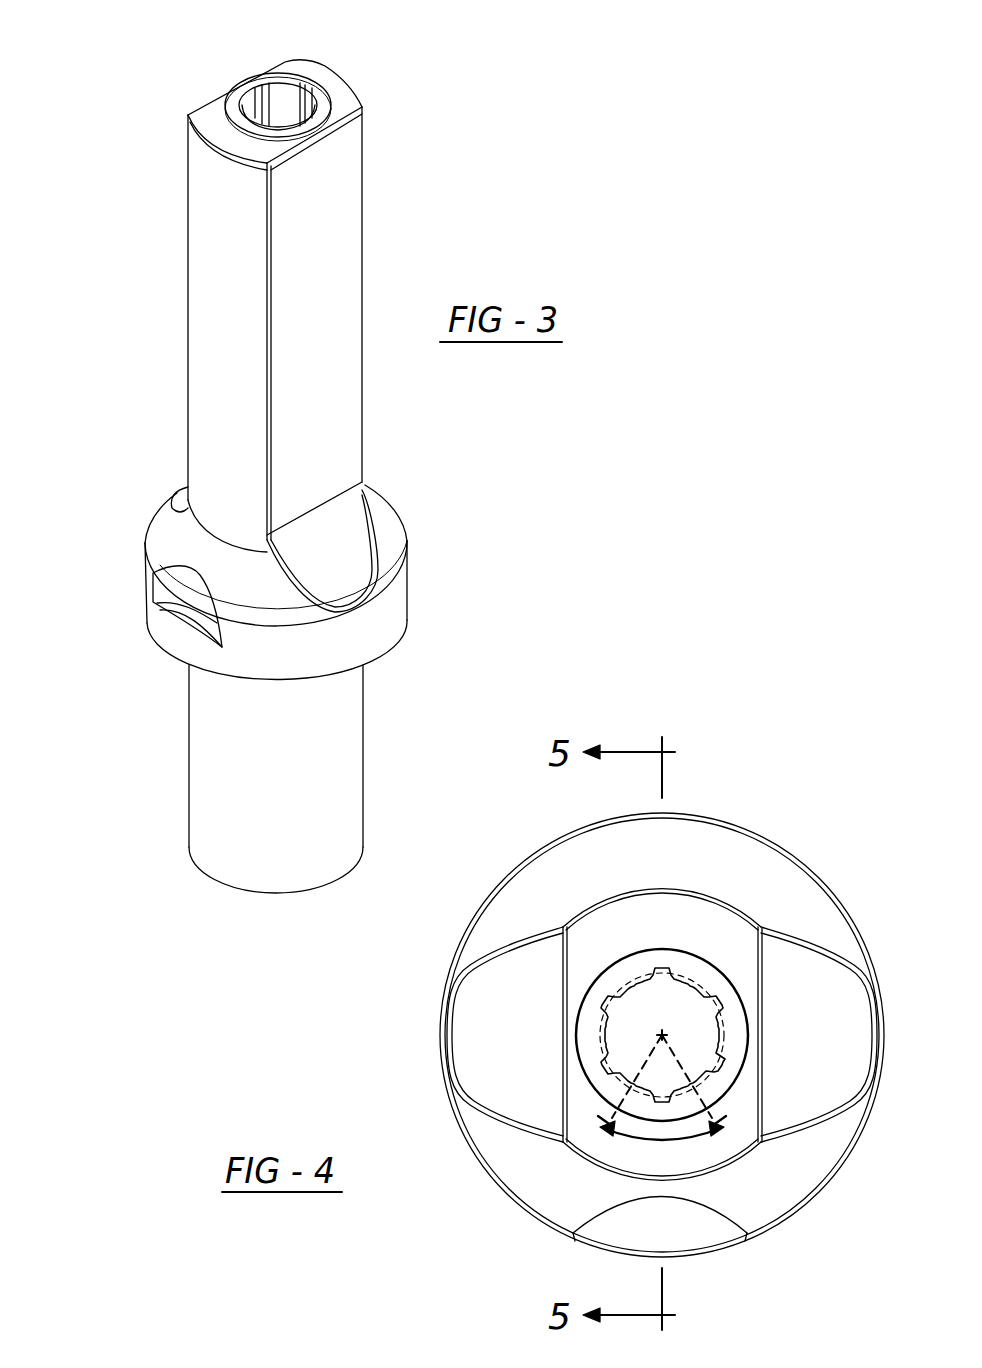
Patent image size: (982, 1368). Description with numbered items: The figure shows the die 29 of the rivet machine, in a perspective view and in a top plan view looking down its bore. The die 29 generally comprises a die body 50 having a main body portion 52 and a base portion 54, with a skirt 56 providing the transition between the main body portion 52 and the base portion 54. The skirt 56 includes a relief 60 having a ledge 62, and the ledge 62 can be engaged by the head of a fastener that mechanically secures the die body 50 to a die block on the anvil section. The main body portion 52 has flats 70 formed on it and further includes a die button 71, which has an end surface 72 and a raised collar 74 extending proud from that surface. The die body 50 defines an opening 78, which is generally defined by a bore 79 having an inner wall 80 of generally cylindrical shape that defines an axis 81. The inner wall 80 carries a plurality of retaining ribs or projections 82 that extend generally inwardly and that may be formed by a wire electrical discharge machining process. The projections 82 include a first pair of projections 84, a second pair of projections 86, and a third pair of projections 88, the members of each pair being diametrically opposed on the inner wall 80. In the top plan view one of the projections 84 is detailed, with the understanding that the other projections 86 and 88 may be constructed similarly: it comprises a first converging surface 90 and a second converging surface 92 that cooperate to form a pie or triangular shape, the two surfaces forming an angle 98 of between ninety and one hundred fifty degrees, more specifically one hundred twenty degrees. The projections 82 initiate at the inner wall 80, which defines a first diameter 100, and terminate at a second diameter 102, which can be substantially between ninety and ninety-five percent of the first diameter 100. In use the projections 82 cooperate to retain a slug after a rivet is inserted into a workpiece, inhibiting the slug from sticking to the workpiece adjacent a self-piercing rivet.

In FIG. 3, the die 29 is at (189, 420).
In FIG. 3, the die body 50 is at (340, 217).
In FIG. 3, the main body portion 52 is at (225, 367).
In FIG. 3, the base portion 54 is at (320, 743).
In FIG. 3, the skirt 56 is at (388, 617).
In FIG. 3, the relief 60 is at (181, 588).
In FIG. 3, the ledge 62 is at (176, 612).
In FIG. 3, the flats 70 is at (189, 316).
In FIG. 3, the die button 71 is at (377, 100).
In FIG. 3, the end surface 72 is at (205, 117).
In FIG. 3, the raised collar 74 is at (247, 127).
In FIG. 3, the opening 78 is at (253, 104).
In FIG. 3, the bore 79 is at (285, 89).
In FIG. 3, the inner wall 80 is at (293, 102).
In FIG. 4, the inner wall 80 is at (597, 1033).
In FIG. 4, the axis 81 is at (651, 986).
In FIG. 3, the projections 82 is at (307, 105).
In FIG. 4, the first pair of projections 84 is at (685, 982).
In FIG. 4, the second pair of projections 86 is at (713, 1003).
In FIG. 4, the third pair of projections 88 is at (632, 1000).
In FIG. 4, the first converging surface 90 is at (660, 1092).
In FIG. 4, the second converging surface 92 is at (663, 1092).
In FIG. 4, the angle 98 is at (663, 1137).
In FIG. 4, the first diameter 100 is at (705, 987).
In FIG. 4, the second diameter 102 is at (720, 1035).